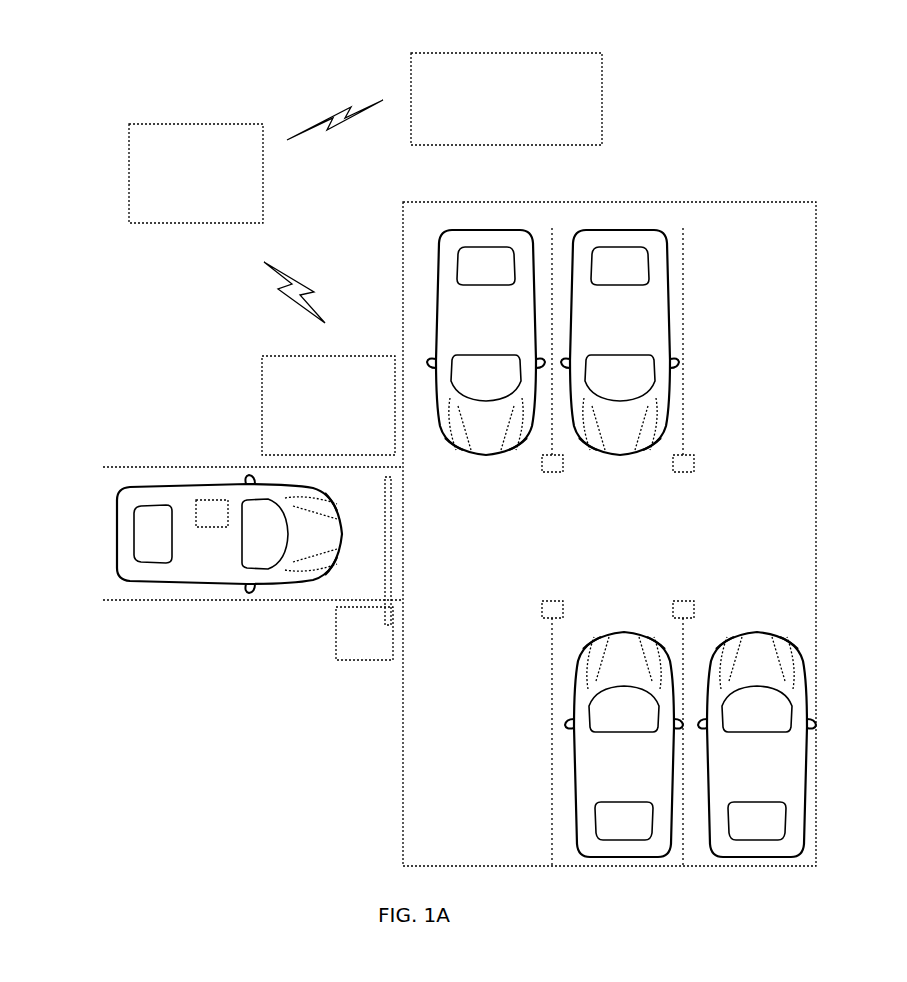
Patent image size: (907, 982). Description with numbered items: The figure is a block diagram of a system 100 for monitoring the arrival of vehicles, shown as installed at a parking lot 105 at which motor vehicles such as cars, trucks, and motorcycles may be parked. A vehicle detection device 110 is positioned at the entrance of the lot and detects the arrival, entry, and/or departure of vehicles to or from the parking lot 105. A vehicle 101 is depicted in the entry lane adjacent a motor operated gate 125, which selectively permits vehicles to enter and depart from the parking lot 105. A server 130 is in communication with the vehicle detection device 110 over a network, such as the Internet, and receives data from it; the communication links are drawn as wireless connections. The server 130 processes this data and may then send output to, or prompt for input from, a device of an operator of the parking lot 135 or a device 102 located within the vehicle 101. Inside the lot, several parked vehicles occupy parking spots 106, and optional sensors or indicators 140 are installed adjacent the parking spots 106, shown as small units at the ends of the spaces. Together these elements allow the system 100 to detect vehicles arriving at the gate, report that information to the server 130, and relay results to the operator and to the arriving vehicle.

The system for monitoring arrival of vehicles 100 is at (776, 51).
The vehicle 101 is at (107, 508).
The device within the vehicle 102 is at (212, 529).
The parking lot 105 is at (818, 238).
The parking spots 106 is at (440, 750).
The vehicle detection device 110 is at (262, 405).
The motor operated gate 125 is at (352, 643).
The server 130 is at (128, 173).
The device of an operator of the parking lot 135 is at (604, 100).
The sensors or indicators 140 is at (563, 468).